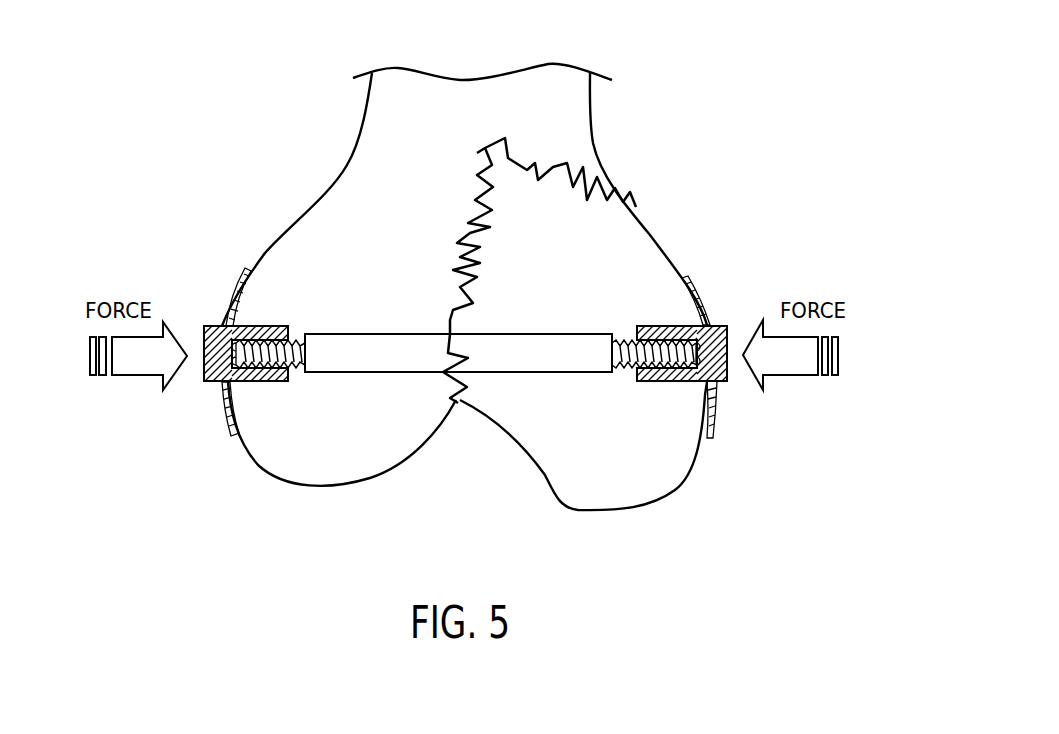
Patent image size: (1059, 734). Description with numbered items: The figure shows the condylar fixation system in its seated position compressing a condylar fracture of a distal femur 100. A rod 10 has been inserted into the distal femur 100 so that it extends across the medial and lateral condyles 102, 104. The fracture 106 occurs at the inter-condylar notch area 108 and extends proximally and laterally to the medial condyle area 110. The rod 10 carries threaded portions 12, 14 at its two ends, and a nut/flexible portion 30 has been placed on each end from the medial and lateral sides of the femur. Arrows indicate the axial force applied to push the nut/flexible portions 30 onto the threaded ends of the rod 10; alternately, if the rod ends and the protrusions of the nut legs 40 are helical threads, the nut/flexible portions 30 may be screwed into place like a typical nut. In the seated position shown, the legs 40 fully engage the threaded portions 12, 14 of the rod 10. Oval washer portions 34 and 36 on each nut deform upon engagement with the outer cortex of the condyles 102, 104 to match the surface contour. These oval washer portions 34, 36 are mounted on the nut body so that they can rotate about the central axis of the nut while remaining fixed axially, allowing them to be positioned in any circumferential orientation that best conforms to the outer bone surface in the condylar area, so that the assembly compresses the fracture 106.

The rod 10 is at (390, 358).
The threaded portion 12 is at (627, 337).
The threaded portion 14 is at (300, 333).
The nut/flexible portion 30 is at (203, 372).
The oval washer portion 34 is at (230, 425).
The oval washer portion 36 is at (232, 293).
The nut leg 40 is at (262, 327).
The distal femur 100 is at (292, 112).
The medial condyle 102 is at (650, 507).
The lateral condyle 104 is at (300, 483).
The fracture 106 is at (535, 165).
The inter-condylar notch area 108 is at (458, 403).
The medial condyle area 110 is at (633, 207).